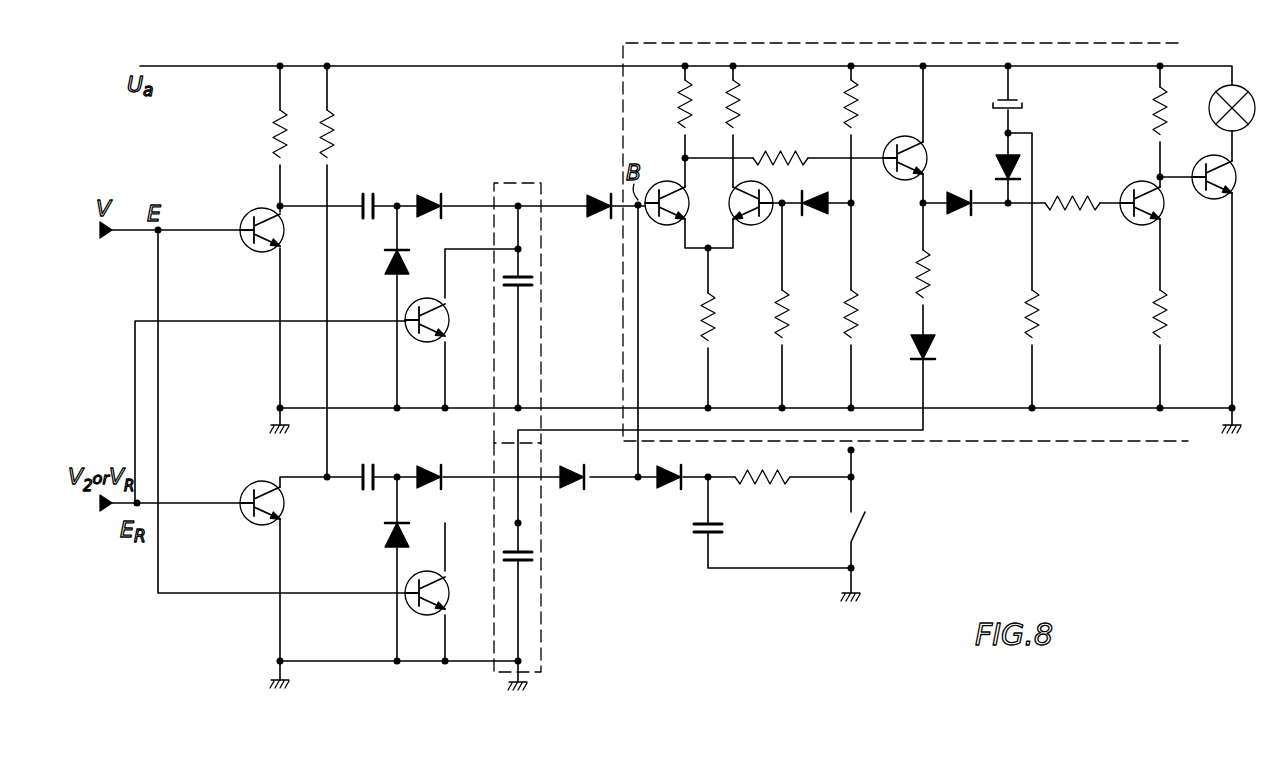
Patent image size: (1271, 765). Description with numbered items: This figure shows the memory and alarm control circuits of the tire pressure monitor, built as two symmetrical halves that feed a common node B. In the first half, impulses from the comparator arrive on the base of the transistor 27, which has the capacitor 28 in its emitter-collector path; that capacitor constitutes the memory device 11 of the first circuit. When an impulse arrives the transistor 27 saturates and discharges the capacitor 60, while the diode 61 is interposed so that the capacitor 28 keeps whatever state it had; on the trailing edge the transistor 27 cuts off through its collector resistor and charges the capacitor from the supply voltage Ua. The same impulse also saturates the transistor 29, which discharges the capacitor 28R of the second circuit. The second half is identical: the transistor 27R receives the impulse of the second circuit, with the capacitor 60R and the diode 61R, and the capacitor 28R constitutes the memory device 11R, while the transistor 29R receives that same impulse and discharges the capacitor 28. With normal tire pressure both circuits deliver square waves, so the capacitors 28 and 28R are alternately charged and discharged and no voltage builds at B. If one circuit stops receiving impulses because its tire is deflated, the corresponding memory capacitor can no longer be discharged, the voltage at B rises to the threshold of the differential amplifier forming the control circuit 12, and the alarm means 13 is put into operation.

The transistor 27 is at (257, 210).
The capacitor 60 is at (368, 193).
The diode 61 is at (435, 194).
The memory device 11 is at (517, 182).
The capacitor 28 is at (538, 283).
The transistor 29R is at (449, 318).
The control circuit 12 is at (630, 106).
The alarm means 13 is at (1213, 110).
The capacitor 60R is at (367, 464).
The diode 61R is at (432, 464).
The capacitor 28R is at (538, 556).
The transistor 29 is at (448, 598).
The memory device 11R is at (530, 640).
The transistor 27R is at (243, 525).